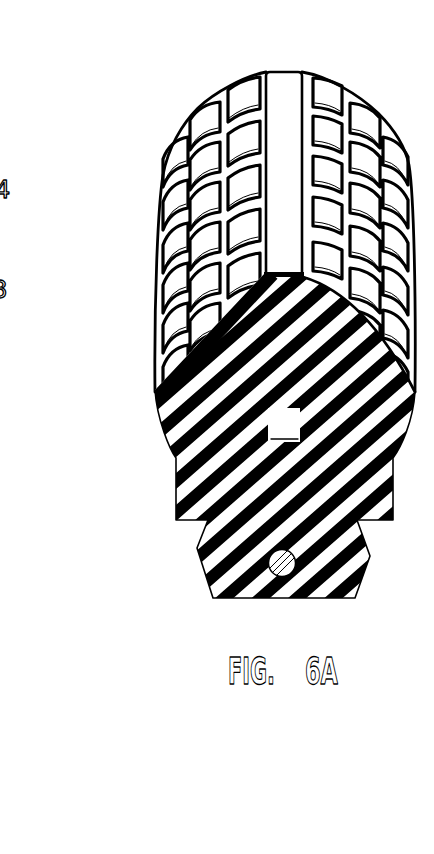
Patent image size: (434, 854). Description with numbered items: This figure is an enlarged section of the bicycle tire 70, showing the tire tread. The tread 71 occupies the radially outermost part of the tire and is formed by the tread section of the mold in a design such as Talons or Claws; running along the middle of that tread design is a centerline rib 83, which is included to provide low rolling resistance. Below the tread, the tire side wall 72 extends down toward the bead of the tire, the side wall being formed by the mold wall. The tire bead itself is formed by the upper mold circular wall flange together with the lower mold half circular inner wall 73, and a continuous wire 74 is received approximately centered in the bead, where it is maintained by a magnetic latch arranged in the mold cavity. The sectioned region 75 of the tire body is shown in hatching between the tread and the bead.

The bicycle tire 70 is at (150, 493).
The tread 71 is at (172, 289).
The tire side wall 72 is at (157, 437).
The lower mold half circular inner wall 73 is at (200, 560).
The continuous wire 74 is at (337, 597).
The elastomeric material 75 is at (284, 425).
The centerline rib 83 is at (278, 108).